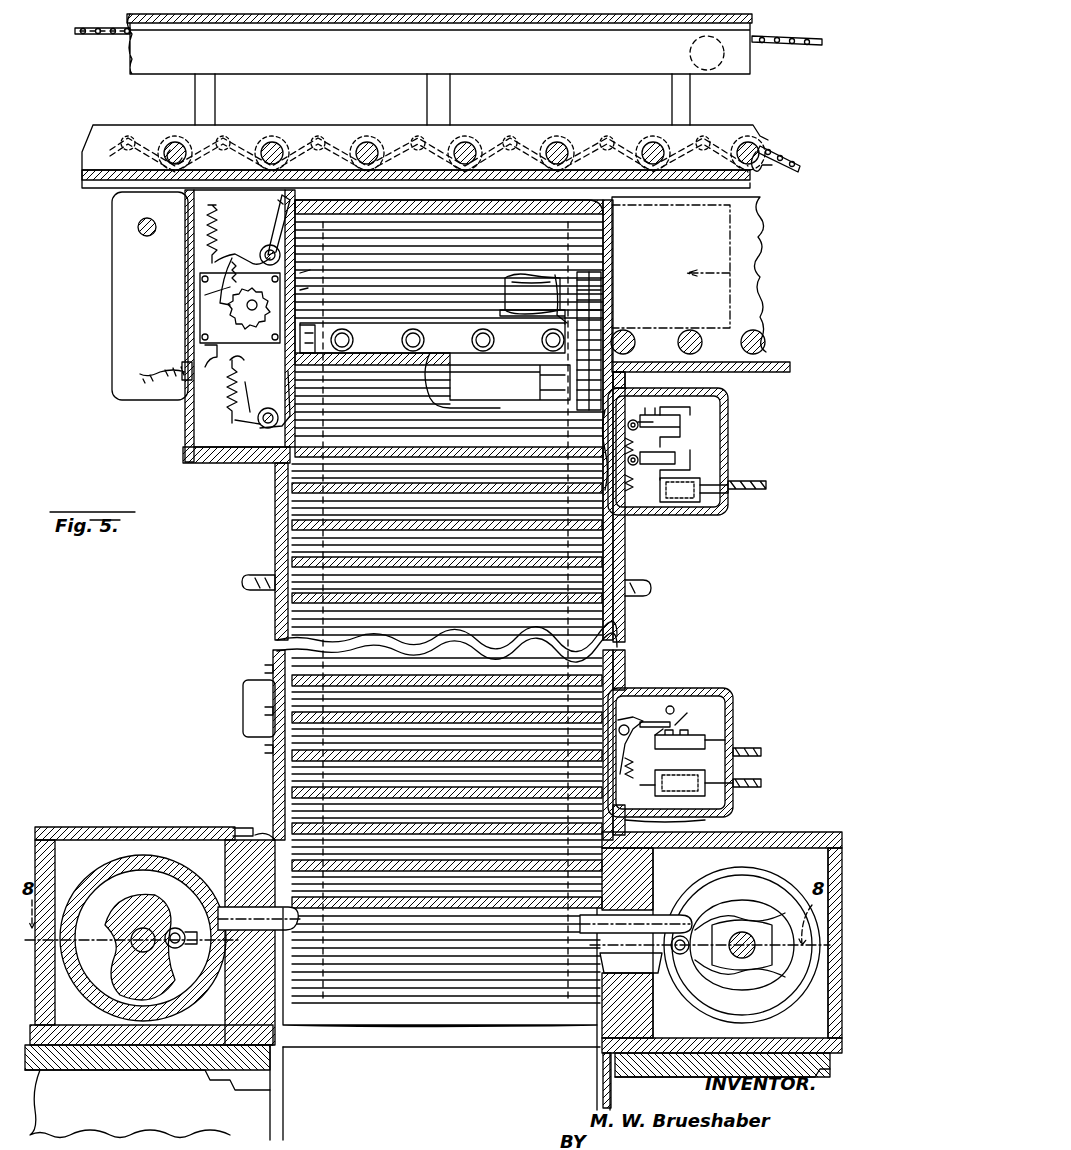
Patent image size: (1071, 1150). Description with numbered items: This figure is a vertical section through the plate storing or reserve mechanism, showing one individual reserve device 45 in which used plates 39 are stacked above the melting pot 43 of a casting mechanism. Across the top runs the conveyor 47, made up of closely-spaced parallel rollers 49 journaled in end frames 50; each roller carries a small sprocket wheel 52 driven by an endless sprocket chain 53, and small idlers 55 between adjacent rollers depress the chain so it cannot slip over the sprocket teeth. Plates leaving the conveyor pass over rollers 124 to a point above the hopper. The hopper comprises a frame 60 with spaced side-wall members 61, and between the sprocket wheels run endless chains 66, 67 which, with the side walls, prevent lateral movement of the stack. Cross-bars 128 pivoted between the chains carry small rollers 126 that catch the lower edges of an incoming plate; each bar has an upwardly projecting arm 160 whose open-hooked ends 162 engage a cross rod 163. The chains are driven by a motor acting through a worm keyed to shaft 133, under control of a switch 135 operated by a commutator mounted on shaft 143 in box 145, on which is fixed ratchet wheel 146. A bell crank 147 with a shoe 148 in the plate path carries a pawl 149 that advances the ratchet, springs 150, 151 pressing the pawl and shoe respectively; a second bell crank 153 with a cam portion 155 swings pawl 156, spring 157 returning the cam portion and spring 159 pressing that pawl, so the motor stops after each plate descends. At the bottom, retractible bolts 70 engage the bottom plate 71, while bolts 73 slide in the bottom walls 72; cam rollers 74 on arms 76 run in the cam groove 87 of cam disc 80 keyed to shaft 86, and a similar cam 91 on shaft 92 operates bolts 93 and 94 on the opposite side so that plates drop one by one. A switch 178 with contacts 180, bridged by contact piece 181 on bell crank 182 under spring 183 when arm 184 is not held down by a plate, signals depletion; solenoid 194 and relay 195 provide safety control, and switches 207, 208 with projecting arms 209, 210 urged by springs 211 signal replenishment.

The used plate 39 is at (598, 258).
The melting pot 43 is at (272, 1130).
The reserve device 45 is at (273, 778).
The conveyor 47 is at (439, 44).
The rollers 49 is at (274, 146).
The end frames 50 is at (305, 130).
The sprocket wheel 52 is at (168, 150).
The sprocket chain 53 is at (770, 35).
The idlers 55 is at (225, 138).
The frame 60 is at (615, 628).
The side-wall members 61 is at (275, 548).
The endless chain 66 is at (598, 302).
The endless chain 67 is at (320, 331).
The retractible bolt 70 is at (658, 915).
The bottom plate 71 is at (437, 902).
The bottom walls 72 is at (285, 1045).
The bolt 73 is at (631, 963).
The cam roller 74 is at (712, 945).
The arm 76 is at (685, 936).
The cam disc 80 is at (778, 877).
The shaft 86 is at (742, 932).
The cam groove 87 is at (742, 940).
The cam 91 is at (124, 860).
The shaft 92 is at (110, 960).
The bolt 93 is at (290, 922).
The bolt 94 is at (235, 963).
The rollers 124 is at (750, 332).
The rollers 126 is at (470, 358).
The cross-bars 128 is at (468, 308).
The shaft 133 is at (136, 228).
The switch 135 is at (210, 324).
The shaft 143 is at (240, 308).
The box 145 is at (215, 296).
The ratchet wheel 146 is at (240, 322).
The bell crank 147 is at (275, 232).
The shoe 148 is at (285, 207).
The pawl 149 is at (215, 304).
The spring 150 is at (242, 270).
The spring 151 is at (207, 224).
The second bell crank 153 is at (262, 430).
The cam portion 155 is at (290, 365).
The pawl 156 is at (300, 274).
The spring 157 is at (225, 405).
The spring 159 is at (306, 292).
The arm 160 is at (560, 262).
The open-hooked ends 162 is at (532, 294).
The cross rod 163 is at (511, 318).
The switch 178 is at (690, 725).
The contacts 180 is at (680, 742).
The contact piece 181 is at (690, 716).
The bell crank 182 is at (628, 720).
The spring 183 is at (655, 722).
The arm 184 is at (705, 822).
The solenoid 194 is at (690, 792).
The relay 195 is at (692, 512).
The switch 207 is at (660, 427).
The switch 208 is at (680, 462).
The projecting arm 209 is at (655, 423).
The projecting arm 210 is at (620, 490).
The springs 211 is at (620, 430).